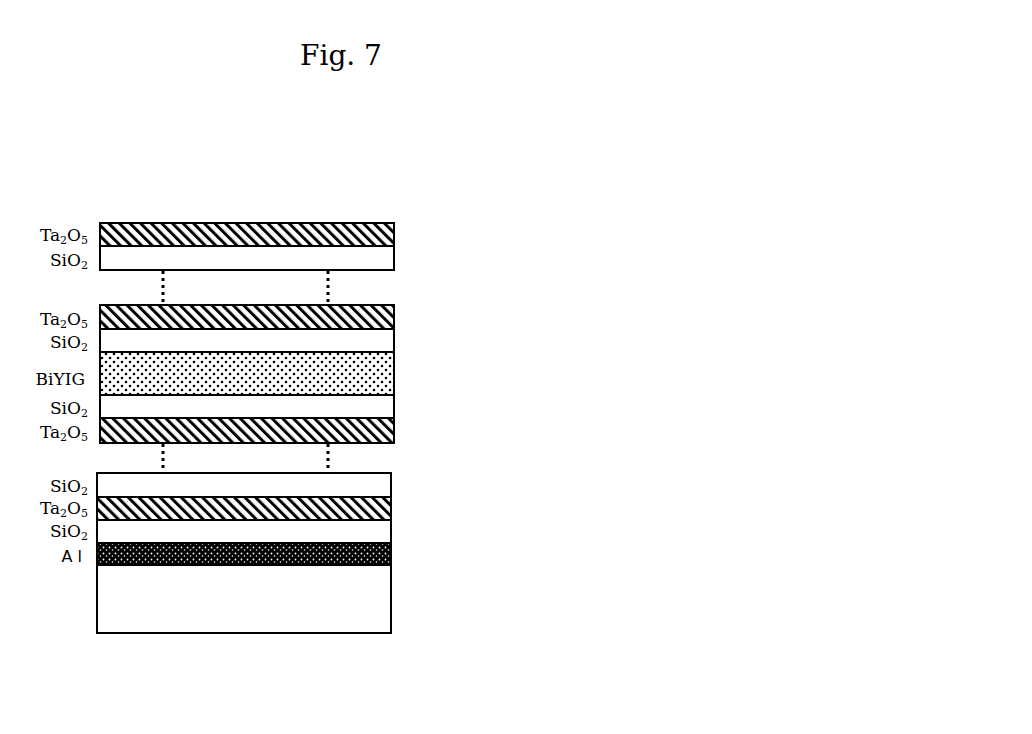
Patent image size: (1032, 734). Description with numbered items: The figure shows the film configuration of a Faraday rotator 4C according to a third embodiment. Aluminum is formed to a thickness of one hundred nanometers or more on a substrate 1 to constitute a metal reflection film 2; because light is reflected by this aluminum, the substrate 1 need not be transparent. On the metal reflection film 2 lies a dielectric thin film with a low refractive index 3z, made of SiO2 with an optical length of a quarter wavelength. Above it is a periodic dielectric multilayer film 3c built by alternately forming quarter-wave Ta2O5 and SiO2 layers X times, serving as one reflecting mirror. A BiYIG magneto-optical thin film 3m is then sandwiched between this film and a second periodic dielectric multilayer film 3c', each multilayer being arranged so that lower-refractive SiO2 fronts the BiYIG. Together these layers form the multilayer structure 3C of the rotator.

The substrate 1 is at (360, 612).
The metal reflection film 2 is at (388, 553).
The dielectric thin film with a low refractive index 3z is at (383, 532).
The periodic dielectric multilayer film 3c is at (405, 457).
The periodic dielectric multilayer film 3c' is at (410, 287).
The magneto-optical thin film 3m is at (374, 377).
The film configuration of periodic dielectric multilayer films and magneto-optical t 3C is at (487, 413).
The Faraday rotator 4C is at (516, 450).